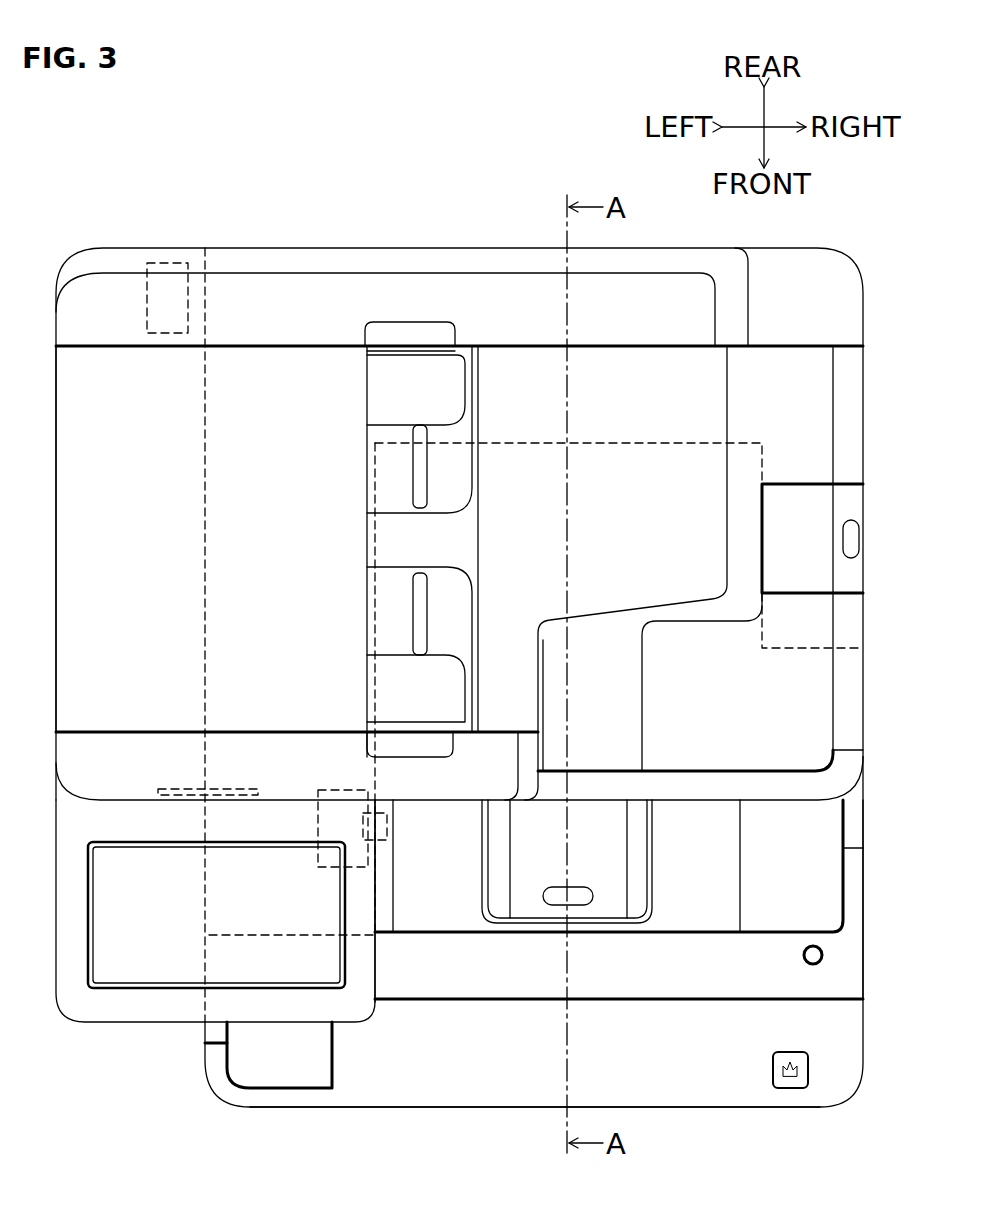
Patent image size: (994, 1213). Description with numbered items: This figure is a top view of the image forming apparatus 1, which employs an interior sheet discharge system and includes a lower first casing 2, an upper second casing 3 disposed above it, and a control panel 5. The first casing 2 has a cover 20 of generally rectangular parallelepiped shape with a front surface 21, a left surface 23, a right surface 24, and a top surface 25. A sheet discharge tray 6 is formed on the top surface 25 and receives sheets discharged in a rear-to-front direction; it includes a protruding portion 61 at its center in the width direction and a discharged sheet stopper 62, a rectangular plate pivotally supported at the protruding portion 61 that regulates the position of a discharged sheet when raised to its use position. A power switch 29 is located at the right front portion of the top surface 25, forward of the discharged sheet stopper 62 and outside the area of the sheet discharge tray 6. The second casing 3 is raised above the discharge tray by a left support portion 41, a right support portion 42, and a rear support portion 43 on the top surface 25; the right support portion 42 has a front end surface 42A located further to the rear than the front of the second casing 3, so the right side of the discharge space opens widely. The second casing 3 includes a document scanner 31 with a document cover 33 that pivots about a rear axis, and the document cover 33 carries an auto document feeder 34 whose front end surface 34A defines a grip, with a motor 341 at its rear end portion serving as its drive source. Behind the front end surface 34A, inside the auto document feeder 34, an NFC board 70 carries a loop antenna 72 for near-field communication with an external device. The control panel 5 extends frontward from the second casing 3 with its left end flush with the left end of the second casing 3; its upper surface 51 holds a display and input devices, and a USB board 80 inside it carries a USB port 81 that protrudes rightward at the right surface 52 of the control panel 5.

The image forming apparatus 1 is at (110, 200).
The first casing 2 is at (200, 1090).
The second casing 3 is at (345, 232).
The control panel 5 is at (85, 1026).
The sheet discharge tray 6 is at (690, 826).
The cover 20 is at (226, 1103).
The front surface 21 is at (376, 1110).
The left surface 23 is at (205, 1035).
The right surface 24 is at (866, 870).
The top surface 25 is at (420, 1097).
The power switch 29 is at (823, 953).
The document scanner 31 is at (407, 245).
The document cover 33 is at (852, 318).
The auto document feeder (ADF) 34 is at (250, 370).
The front end surface 34A is at (281, 803).
The motor 341 is at (166, 262).
The left support portion 41 is at (375, 540).
The right support portion 42 is at (762, 475).
The front end surface 42A is at (797, 648).
The rear support portion 43 is at (597, 445).
The upper surface 51 is at (125, 1012).
The right surface 52 is at (378, 955).
The protruding portion 61 is at (658, 898).
The discharged sheet stopper 62 is at (613, 864).
The NFC board 70 is at (168, 785).
The loop antenna 72 is at (190, 800).
The USB board 80 is at (330, 788).
The USB port 81 is at (390, 826).